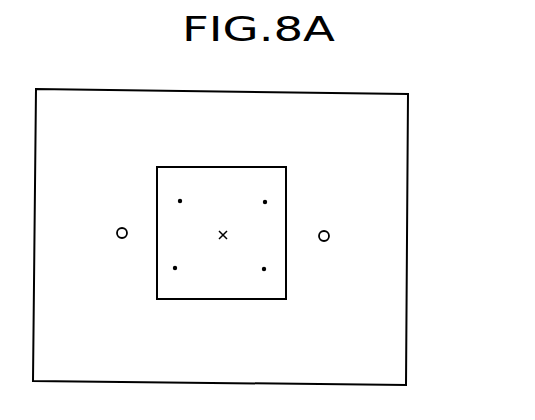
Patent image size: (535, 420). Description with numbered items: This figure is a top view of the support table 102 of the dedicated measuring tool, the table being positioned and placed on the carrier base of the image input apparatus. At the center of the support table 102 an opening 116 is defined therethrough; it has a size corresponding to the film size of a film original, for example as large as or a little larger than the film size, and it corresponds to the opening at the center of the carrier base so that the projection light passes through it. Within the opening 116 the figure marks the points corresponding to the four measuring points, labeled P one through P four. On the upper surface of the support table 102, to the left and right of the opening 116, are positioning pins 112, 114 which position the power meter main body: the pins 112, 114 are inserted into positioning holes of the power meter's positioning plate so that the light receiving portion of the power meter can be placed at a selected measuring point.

The support table 102 is at (387, 202).
The positioning pin 112 is at (116, 238).
The positioning pin 114 is at (329, 241).
The opening 116 is at (159, 283).